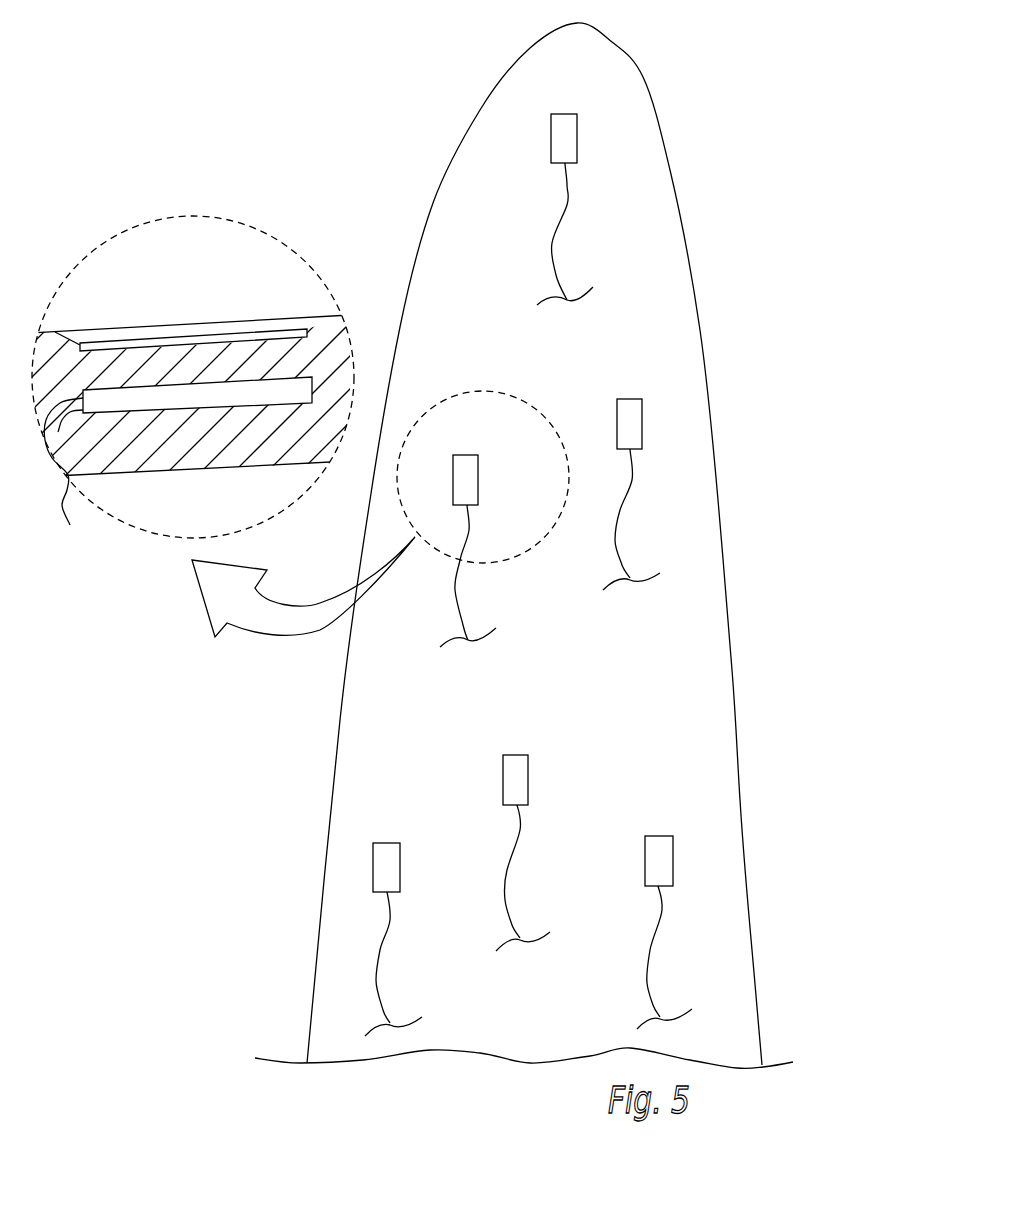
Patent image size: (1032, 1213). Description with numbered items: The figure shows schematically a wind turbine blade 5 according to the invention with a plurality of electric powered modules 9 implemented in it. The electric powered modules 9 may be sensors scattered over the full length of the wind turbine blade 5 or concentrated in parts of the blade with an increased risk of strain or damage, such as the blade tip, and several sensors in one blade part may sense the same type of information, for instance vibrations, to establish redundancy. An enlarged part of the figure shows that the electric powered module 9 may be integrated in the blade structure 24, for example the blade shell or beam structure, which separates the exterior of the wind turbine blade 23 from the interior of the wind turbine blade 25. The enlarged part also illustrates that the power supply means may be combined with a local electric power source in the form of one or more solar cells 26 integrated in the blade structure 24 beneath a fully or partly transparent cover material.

The wind turbine blade 5 is at (251, 971).
The electric powered modules 9 is at (553, 137).
The exterior of the wind turbine blade 23 is at (167, 233).
The wind turbine blade structure 24 is at (337, 430).
The interior of the wind turbine blade 25 is at (190, 532).
The solar cell and partly or fully transparent blade surface layer 26 is at (307, 330).